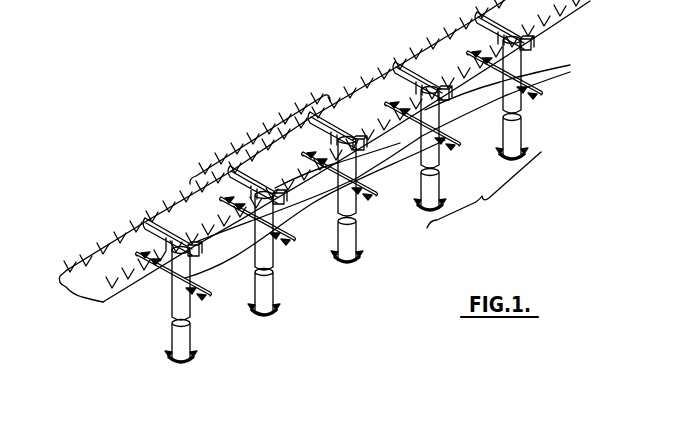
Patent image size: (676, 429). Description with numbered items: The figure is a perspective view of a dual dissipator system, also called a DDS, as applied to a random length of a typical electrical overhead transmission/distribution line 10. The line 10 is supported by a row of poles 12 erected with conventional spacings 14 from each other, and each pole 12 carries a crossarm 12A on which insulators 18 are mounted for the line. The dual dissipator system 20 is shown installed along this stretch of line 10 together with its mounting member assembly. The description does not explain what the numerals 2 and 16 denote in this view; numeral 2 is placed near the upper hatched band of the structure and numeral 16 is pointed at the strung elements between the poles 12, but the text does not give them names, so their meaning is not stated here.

The electrical overhead distribution line 10 is at (363, 80).
The hatched guide band 2 is at (254, 135).
The poles 12 is at (190, 305).
The crossarms 12A is at (540, 90).
The conventional spacings 14 is at (484, 190).
The wire rails 16 is at (323, 160).
The insulators 18 is at (367, 193).
The dual dissipator system (DDS) 20 is at (81, 291).